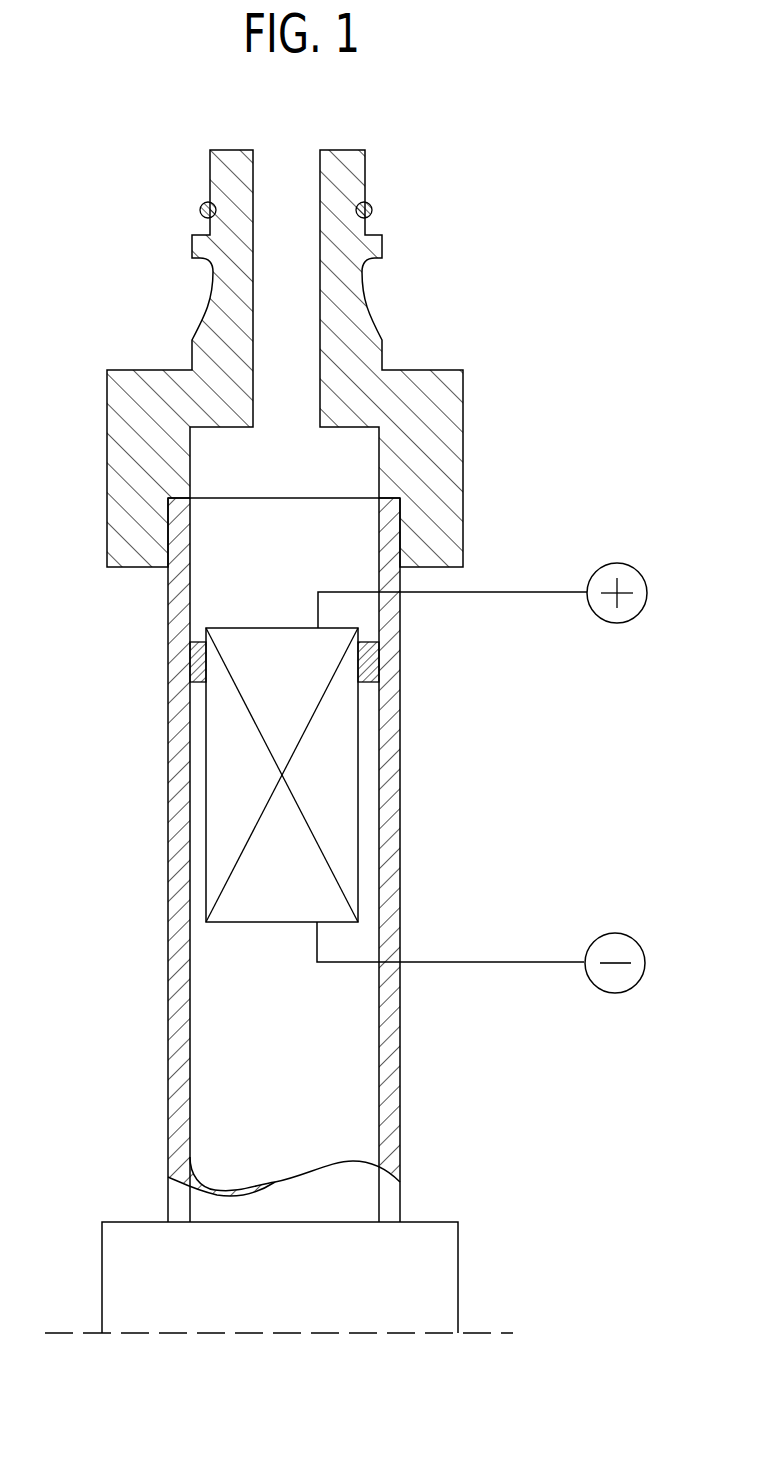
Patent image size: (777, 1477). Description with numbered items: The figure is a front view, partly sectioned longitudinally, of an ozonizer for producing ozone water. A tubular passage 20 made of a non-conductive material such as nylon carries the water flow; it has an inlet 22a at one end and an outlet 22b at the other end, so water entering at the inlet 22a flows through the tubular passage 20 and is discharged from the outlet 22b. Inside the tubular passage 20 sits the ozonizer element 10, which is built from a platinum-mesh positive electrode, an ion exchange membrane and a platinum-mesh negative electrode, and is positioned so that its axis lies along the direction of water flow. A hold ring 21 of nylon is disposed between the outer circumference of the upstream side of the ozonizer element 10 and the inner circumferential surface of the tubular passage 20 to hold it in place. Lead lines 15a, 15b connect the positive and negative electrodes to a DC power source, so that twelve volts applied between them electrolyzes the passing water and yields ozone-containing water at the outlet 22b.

The ozonizer element 10 is at (205, 822).
The lead line 15a is at (540, 592).
The lead line 15b is at (520, 963).
The tubular passage 20 is at (167, 802).
The hold ring 21 is at (190, 650).
The inlet 22a is at (295, 285).
The outlet 22b is at (407, 1233).